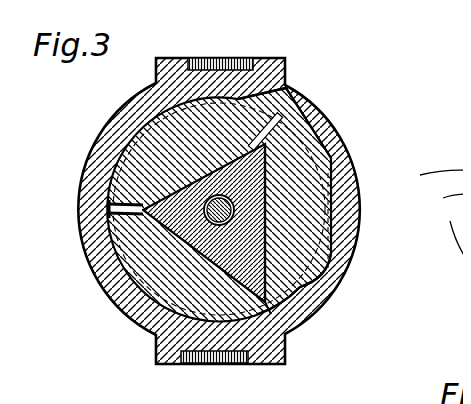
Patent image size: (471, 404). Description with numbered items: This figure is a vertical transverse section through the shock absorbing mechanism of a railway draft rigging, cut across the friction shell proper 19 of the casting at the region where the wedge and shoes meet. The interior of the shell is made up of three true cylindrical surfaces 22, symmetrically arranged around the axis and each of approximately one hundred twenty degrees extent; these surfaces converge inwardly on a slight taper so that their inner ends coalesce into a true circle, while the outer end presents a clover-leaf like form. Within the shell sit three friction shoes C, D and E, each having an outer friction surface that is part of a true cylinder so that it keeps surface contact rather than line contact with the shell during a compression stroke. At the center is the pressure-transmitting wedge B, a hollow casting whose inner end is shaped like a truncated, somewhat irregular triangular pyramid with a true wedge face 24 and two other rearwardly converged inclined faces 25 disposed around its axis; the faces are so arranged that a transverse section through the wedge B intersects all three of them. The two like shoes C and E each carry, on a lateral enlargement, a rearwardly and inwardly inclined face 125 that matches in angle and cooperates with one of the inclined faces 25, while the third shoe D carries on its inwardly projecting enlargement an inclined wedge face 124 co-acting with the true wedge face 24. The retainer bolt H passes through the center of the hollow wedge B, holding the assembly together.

The friction shell proper 19 is at (336, 125).
The true cylindrical surfaces 22 is at (282, 78).
The true wedge face 24 is at (286, 259).
The rearwardly converged inclined faces 25 is at (100, 200).
The inclined wedge face 124 is at (257, 198).
The rearwardly and inwardly inclined face 125 is at (153, 169).
The pressure-transmitting wedge B is at (165, 219).
The friction shoe C is at (126, 123).
The friction shoe D is at (315, 175).
The friction shoe E is at (110, 290).
The retainer bolt H is at (258, 232).